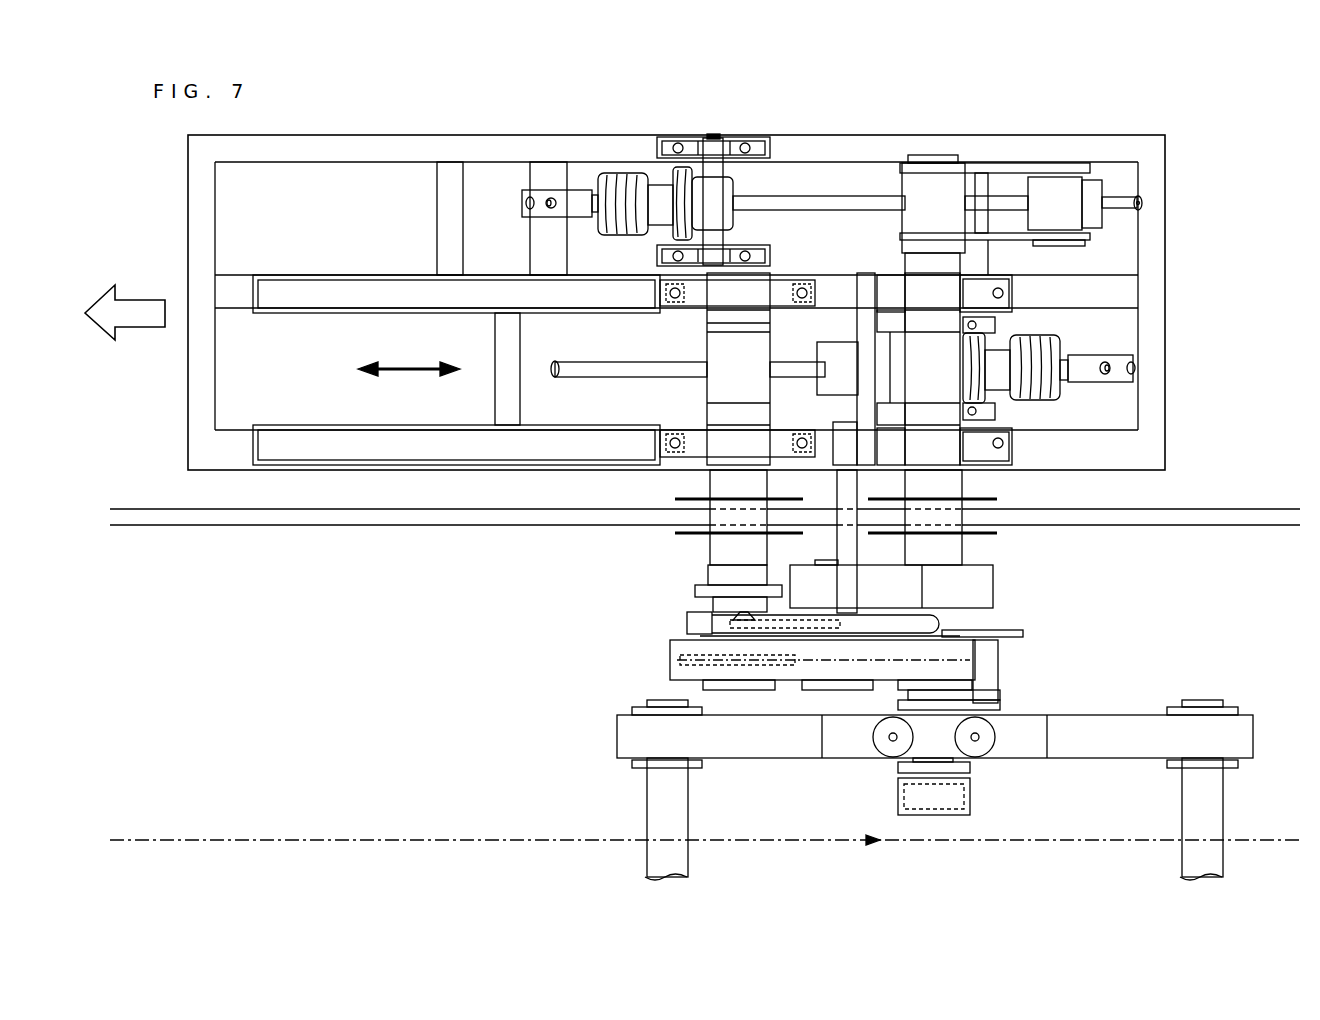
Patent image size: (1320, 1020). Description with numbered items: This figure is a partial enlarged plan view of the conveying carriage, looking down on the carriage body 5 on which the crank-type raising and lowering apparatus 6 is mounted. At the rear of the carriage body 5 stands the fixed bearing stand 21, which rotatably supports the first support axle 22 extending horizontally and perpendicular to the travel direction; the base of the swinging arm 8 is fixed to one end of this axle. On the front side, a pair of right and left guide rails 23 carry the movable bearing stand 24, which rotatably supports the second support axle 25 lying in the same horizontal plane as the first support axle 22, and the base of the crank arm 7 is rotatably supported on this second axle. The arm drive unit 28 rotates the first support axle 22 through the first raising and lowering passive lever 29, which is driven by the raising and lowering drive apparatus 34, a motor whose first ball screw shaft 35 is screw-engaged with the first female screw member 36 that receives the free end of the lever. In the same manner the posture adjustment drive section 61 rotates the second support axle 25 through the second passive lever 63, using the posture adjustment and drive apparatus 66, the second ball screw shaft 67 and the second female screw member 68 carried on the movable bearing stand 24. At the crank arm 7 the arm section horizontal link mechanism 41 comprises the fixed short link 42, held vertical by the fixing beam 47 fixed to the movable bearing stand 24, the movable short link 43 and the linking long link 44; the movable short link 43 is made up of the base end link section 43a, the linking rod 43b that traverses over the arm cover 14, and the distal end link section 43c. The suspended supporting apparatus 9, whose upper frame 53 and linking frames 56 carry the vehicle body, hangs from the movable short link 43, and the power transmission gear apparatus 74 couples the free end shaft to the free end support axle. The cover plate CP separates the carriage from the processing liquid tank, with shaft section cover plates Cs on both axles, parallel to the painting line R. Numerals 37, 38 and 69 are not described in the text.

The carriage body 5 is at (1170, 203).
The raising and lowering apparatus 6 is at (638, 667).
The crank arm 7 is at (788, 680).
The swinging arm 8 is at (995, 585).
The suspended supporting apparatus 9 is at (1149, 700).
The arm cover 14 is at (670, 661).
The fixed bearing stand 21 is at (1020, 291).
The first support axle 22 is at (921, 360).
The guide rails 23 is at (366, 292).
The movable bearing stand 24 is at (638, 407).
The second support axle 25 is at (737, 419).
The arm drive unit 28 is at (848, 134).
The first raising and lowering passive lever 29 is at (1012, 238).
The raising and lowering drive apparatus 34 is at (572, 195).
The first ball screw shaft 35 is at (862, 200).
The first female screw member 36 is at (1085, 211).
The bearing bracket 37 is at (733, 148).
The vertical shaft 38 is at (712, 170).
The arm section horizontal link mechanism 41 is at (774, 605).
The fixed short link 42 is at (688, 626).
The movable short link 43 is at (1080, 632).
The base end link section 43a is at (1000, 706).
The linking rod 43b is at (987, 686).
The distal end link section 43c is at (1000, 635).
The linking long link 44 is at (884, 620).
The fixing beam 47 is at (840, 551).
The upper frame 53 is at (1089, 759).
The linking frames 56 is at (680, 808).
The posture adjustment drive section 61 is at (1085, 296).
The second passive lever 63 is at (826, 341).
The posture adjustment and drive apparatus 66 is at (1082, 366).
The second ball screw shaft 67 is at (607, 368).
The second female screw member 68 is at (848, 350).
The bearing 69 is at (1000, 411).
The power transmission gear apparatus 74 is at (906, 798).
The cover plate CP is at (345, 524).
The shaft section cover plates Cs is at (997, 499).
The painting line R is at (572, 838).